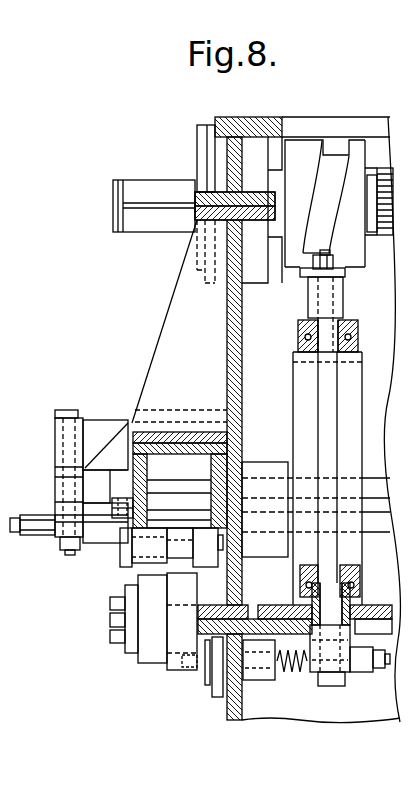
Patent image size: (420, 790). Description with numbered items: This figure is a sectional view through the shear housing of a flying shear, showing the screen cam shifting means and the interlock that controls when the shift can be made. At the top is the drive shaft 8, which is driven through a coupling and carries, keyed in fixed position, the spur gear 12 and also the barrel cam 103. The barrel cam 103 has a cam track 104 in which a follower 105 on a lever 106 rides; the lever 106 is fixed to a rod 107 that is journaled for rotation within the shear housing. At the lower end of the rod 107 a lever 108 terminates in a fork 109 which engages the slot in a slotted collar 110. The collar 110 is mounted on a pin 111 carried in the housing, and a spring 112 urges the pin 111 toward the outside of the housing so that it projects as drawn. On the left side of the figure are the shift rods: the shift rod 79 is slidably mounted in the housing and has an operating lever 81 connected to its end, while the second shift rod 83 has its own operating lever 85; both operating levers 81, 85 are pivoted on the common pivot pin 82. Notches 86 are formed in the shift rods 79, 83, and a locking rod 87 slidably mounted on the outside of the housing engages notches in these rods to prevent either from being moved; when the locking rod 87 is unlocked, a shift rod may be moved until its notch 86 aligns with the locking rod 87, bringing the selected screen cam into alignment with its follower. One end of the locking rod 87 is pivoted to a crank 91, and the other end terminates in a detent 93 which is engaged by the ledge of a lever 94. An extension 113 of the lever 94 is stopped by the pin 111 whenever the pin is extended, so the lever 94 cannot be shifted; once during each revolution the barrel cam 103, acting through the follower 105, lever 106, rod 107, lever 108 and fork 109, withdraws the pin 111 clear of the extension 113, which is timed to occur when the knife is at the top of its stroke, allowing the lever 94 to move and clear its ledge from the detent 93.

The drive shaft 8 is at (158, 229).
The spur gear 12 is at (378, 247).
The shift rod 79 is at (110, 483).
The operating lever 81 is at (80, 497).
The pivot pin 82 is at (65, 408).
The second shift rod 83 is at (95, 527).
The operating lever 85 is at (52, 522).
The notches 86 is at (176, 497).
The locking rod 87 is at (127, 498).
The crank 91 is at (115, 543).
The detent 93 is at (185, 567).
The lever 94 is at (190, 595).
The barrel cam 103 is at (305, 152).
The cam track 104 is at (338, 152).
The follower 105 is at (307, 266).
The lever 106 is at (342, 298).
The rod 107 is at (320, 382).
The lever 108 is at (330, 663).
The fork 109 is at (320, 658).
The slotted collar 110 is at (288, 658).
The pin 111 is at (200, 681).
The spring 112 is at (260, 722).
The extension 113 is at (173, 665).